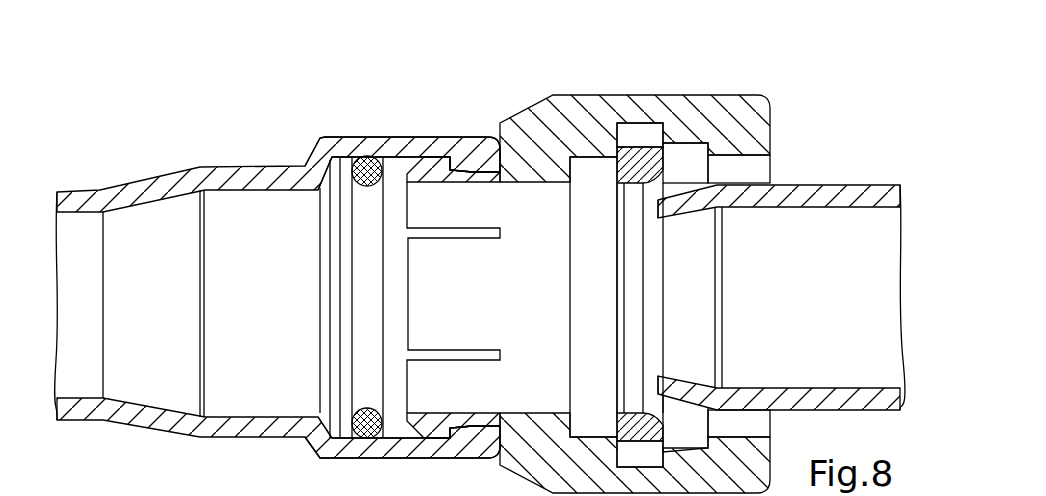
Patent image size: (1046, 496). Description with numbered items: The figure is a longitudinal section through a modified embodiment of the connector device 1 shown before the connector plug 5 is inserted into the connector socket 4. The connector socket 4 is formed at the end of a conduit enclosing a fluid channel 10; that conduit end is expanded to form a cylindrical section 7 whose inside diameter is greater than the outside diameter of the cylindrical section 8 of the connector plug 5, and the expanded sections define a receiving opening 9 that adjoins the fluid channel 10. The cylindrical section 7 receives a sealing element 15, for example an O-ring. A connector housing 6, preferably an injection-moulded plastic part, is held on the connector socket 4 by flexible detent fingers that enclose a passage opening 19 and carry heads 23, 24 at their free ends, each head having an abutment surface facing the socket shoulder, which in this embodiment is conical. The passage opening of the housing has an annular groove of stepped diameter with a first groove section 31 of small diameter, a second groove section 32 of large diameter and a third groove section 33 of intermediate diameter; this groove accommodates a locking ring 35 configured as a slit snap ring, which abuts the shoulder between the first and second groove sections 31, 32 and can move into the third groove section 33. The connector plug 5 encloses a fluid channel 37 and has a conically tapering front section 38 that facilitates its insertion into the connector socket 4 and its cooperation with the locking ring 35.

The connector device 1 is at (806, 91).
The connector socket 4 is at (226, 161).
The connector plug 5 is at (857, 156).
The connector housing 6 is at (524, 124).
The cylindrical section 7 is at (390, 326).
The cylindrical section 8 is at (818, 202).
The receiving opening 9 is at (280, 260).
The fluid channel 10 is at (97, 338).
The sealing element 15 is at (363, 288).
The passage opening 19 is at (531, 306).
The head 23 is at (430, 165).
The head 24 is at (380, 452).
The first groove section 31 is at (592, 152).
The second groove section 32 is at (643, 120).
The third groove section 33 is at (693, 140).
The locking ring 35 is at (652, 432).
The fluid channel 37 is at (875, 270).
The conically tapering front section 38 is at (675, 385).